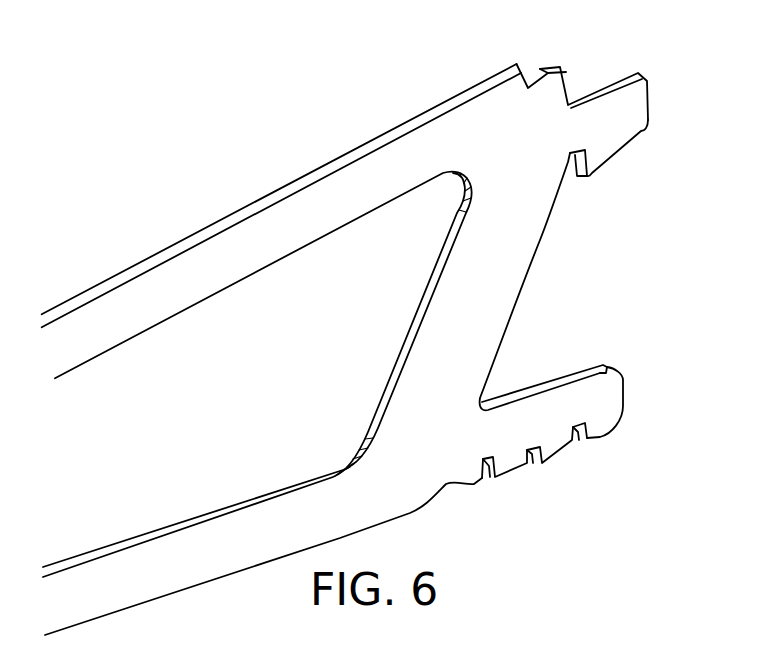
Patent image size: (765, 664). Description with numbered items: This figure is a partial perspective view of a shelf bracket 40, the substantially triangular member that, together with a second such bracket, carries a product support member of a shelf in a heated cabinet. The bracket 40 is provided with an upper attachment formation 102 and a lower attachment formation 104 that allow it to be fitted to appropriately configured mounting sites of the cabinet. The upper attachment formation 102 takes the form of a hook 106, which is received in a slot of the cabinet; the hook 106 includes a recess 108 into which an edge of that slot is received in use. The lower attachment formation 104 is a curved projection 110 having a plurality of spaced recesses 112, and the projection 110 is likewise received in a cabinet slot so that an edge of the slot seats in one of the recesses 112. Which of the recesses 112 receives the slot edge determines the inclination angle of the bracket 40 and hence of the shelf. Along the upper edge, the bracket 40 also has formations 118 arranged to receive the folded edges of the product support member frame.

The bracket 40 is at (310, 198).
The upper attachment formation 102 is at (607, 119).
The lower attachment formation 104 is at (558, 409).
The hook 106 is at (632, 129).
The recess 108 is at (580, 178).
The curved projection 110 is at (572, 405).
The spaced recesses 112 is at (585, 444).
The formations 118 is at (538, 67).